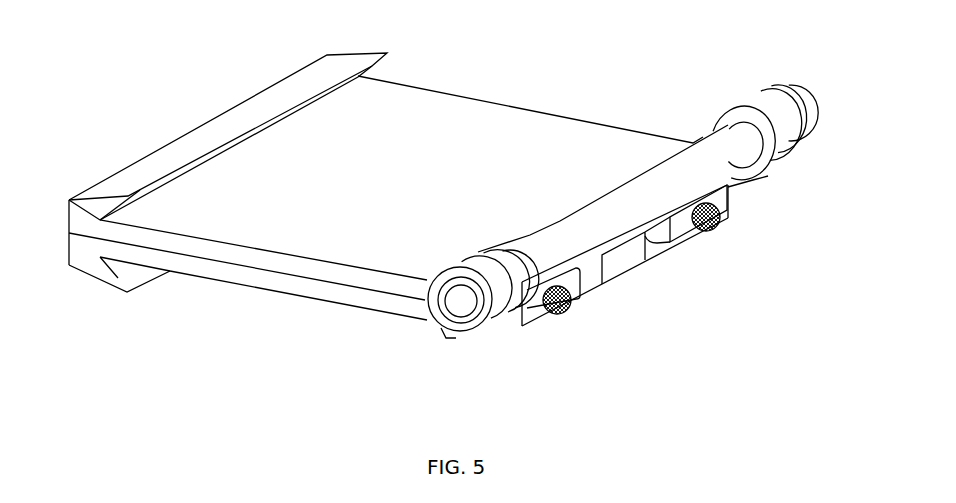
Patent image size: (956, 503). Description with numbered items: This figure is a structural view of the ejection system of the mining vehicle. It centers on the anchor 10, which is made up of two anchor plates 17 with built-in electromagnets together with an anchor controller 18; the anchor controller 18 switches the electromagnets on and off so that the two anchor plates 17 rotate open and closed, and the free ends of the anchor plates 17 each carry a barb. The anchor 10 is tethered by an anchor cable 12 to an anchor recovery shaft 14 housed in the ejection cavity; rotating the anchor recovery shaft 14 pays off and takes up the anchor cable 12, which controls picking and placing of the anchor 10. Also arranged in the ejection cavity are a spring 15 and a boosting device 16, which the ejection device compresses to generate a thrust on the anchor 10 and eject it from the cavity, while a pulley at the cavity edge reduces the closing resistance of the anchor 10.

The anchor 10 is at (377, 137).
The anchor cable 12 is at (483, 307).
The anchor recovery shaft 14 is at (655, 192).
The spring 15 is at (570, 305).
The boosting device 16 is at (713, 266).
The anchor plate 17 is at (330, 205).
The anchor controller 18 is at (623, 267).